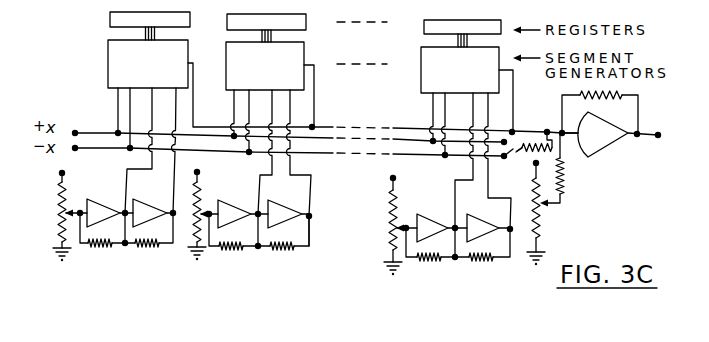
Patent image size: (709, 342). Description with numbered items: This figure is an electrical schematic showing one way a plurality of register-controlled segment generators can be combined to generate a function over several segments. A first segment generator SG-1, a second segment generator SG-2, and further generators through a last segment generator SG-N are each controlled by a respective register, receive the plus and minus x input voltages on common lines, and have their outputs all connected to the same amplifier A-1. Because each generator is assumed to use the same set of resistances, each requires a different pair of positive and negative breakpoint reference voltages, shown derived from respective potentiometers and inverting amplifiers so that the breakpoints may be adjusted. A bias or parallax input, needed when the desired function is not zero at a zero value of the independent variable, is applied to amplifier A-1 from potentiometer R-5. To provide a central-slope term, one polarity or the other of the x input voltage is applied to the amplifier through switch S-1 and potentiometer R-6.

The segment generator SG-1 is at (149, 50).
The segment generator SG-2 is at (266, 52).
The segment generator SG-N is at (461, 56).
The switch S-1 is at (520, 148).
The potentiometer R-6 is at (523, 152).
The potentiometer R-5 is at (542, 208).
The amplifier A-1 is at (611, 124).